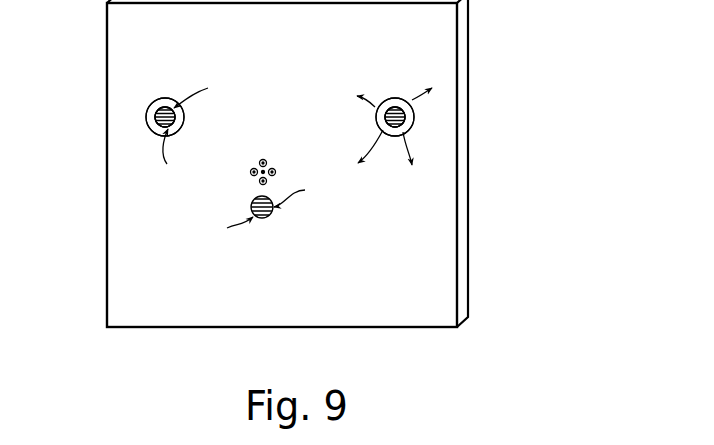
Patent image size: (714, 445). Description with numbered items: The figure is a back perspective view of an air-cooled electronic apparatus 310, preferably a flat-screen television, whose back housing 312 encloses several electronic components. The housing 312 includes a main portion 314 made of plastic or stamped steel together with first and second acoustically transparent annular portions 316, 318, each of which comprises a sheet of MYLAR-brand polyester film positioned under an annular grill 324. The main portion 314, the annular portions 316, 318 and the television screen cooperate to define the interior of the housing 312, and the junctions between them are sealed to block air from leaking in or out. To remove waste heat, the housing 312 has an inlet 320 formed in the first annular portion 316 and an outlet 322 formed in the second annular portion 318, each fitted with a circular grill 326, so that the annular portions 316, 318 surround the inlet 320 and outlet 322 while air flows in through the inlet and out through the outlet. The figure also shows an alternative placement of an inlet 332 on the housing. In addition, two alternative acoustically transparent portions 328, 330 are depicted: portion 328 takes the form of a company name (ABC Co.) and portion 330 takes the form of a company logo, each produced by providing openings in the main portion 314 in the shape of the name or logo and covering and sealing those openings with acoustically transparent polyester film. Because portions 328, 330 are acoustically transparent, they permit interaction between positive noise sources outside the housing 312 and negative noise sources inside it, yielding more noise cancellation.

The air-cooled electronic apparatus 310 is at (528, 62).
The back housing 312 is at (437, 262).
The main portion 314 is at (190, 305).
The first acoustically transparent annular portion 316 is at (165, 97).
The second acoustically transparent annular portion 318 is at (403, 97).
The inlet 320 is at (176, 118).
The outlet 322 is at (405, 117).
The annular grill 324 is at (152, 131).
The circular grill 326 is at (156, 113).
The acoustically transparent portion 328 is at (332, 264).
The acoustically transparent portion 330 is at (276, 160).
The inlet 332 is at (278, 220).